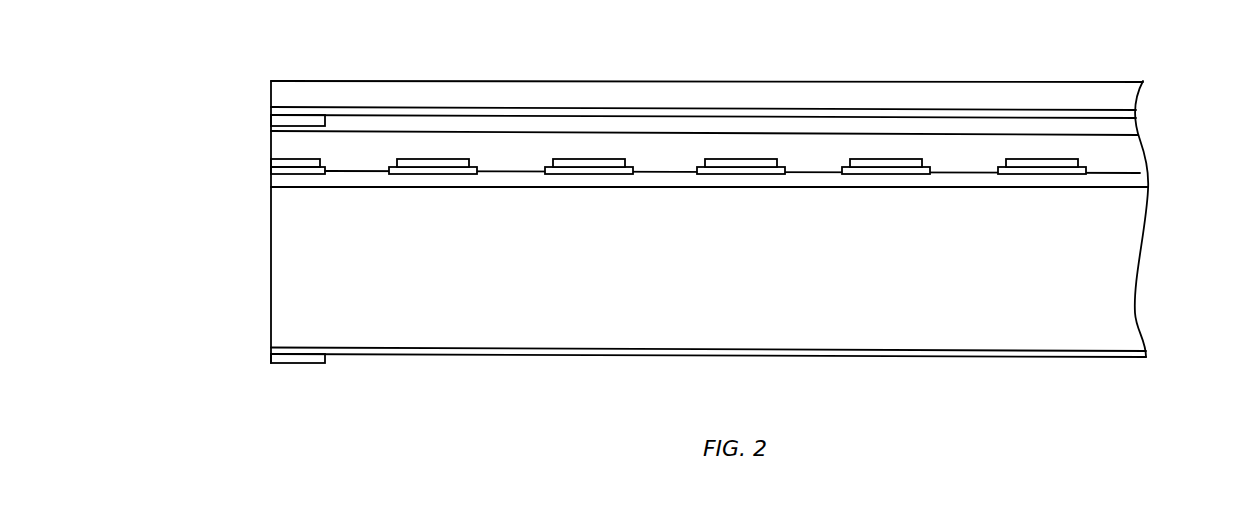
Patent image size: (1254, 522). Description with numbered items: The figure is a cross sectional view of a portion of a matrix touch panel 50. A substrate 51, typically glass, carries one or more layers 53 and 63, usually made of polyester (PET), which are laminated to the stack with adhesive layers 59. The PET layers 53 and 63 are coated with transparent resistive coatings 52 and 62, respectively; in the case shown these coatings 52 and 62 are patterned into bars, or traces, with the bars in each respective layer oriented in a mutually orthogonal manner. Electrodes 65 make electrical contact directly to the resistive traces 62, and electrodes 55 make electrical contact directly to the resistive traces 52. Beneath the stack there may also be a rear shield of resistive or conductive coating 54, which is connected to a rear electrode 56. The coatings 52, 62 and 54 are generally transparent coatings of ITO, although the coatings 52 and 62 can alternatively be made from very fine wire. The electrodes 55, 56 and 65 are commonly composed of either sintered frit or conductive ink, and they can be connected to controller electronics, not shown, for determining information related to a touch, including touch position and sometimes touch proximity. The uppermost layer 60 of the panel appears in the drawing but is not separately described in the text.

The matrix touch panel 50 is at (923, 38).
The substrate 51 is at (1080, 316).
The transparent resistive coating 52 is at (1081, 114).
The PET layer 53 is at (1021, 92).
The rear shield coating 54 is at (983, 357).
The electrodes 55 is at (299, 115).
The rear electrode 56 is at (301, 363).
The adhesive layers 59 is at (1127, 124).
The top surface layer 60 is at (340, 81).
The transparent resistive coating 62 is at (318, 168).
The PET layer 63 is at (285, 140).
The electrodes 65 is at (318, 168).